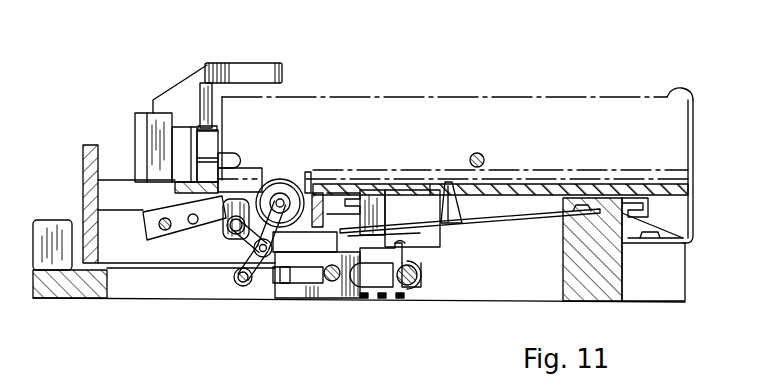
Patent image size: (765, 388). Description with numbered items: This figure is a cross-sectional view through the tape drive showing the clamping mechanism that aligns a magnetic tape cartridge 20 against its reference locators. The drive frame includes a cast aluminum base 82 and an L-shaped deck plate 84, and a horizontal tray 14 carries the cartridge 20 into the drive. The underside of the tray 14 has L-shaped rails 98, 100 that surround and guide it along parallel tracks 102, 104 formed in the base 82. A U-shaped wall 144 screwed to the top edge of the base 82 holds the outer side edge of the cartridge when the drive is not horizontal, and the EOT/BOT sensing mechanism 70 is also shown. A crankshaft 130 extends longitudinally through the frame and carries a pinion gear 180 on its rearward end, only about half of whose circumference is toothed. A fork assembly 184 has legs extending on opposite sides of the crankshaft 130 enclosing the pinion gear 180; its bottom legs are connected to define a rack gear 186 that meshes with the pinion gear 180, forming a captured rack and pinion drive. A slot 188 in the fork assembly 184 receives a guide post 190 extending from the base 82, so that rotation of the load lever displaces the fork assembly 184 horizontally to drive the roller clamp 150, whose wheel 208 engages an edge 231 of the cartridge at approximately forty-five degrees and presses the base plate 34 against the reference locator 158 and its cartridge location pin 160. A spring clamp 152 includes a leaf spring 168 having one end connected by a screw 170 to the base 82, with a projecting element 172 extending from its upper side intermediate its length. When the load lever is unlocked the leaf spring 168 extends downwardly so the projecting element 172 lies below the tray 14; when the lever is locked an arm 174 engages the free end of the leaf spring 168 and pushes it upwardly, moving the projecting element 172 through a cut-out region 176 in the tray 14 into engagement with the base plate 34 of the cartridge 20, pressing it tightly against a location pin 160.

The tray 14 is at (613, 188).
The magnetic tape cartridge 20 is at (483, 95).
The base plate 34 is at (515, 169).
The EOT/BOT sensing mechanism 70 is at (248, 70).
The base 82 is at (598, 295).
The deck plate 84 is at (85, 188).
The L-shaped rail 98 is at (690, 243).
The L-shaped rail 100 is at (348, 206).
The track 102 is at (641, 190).
The track 104 is at (348, 198).
The crankshaft 130 is at (430, 278).
The U-shaped wall 144 is at (689, 104).
The roller clamp 150 is at (171, 248).
The spring clamp 152 is at (532, 220).
The reference locator 158 is at (205, 133).
The cartridge location pin 160 is at (235, 156).
The leaf spring 168 is at (421, 228).
The screw 170 is at (583, 205).
The projecting element 172 is at (449, 181).
The arm 174 is at (417, 235).
The cut-out region 176 is at (432, 184).
The pinion gear 180 is at (388, 265).
The fork assembly 184 is at (305, 300).
The rack gear 186 is at (399, 298).
The slot 188 is at (293, 268).
The guide post 190 is at (333, 282).
The wheel 208 is at (286, 185).
The edge 231 is at (263, 183).